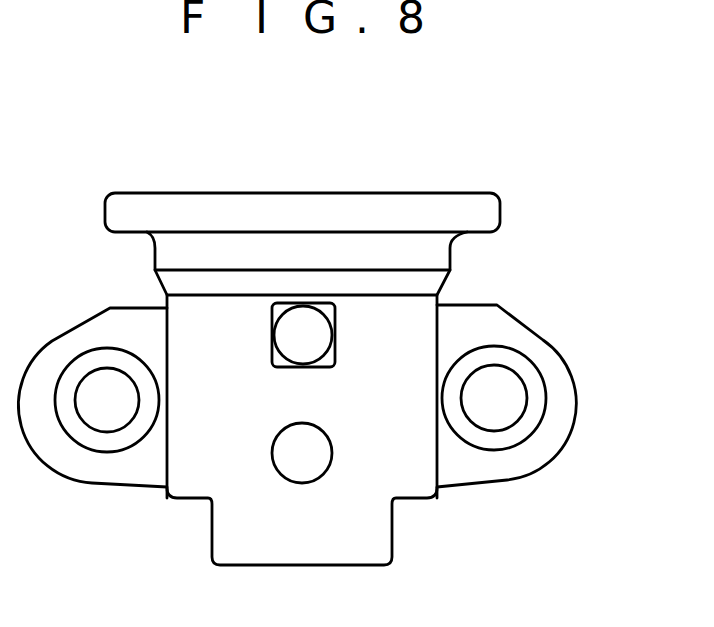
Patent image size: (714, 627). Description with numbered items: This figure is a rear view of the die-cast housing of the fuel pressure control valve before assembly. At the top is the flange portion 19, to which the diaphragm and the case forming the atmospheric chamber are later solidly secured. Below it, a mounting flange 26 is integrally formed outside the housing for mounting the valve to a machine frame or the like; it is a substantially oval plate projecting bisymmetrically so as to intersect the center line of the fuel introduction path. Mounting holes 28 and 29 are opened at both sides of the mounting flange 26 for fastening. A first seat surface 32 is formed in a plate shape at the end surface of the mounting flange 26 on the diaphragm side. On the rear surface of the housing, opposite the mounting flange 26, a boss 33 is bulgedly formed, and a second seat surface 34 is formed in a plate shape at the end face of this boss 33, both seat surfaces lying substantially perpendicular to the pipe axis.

The flange portion 19 is at (452, 252).
The mounting flange 26 is at (492, 332).
The mounting hole 28 is at (98, 422).
The mounting hole 29 is at (505, 400).
The first seat surface 32 is at (116, 306).
The boss 33 is at (305, 342).
The second seat surface 34 is at (302, 303).